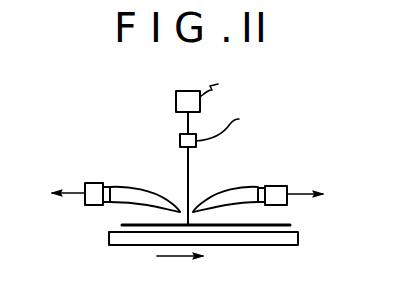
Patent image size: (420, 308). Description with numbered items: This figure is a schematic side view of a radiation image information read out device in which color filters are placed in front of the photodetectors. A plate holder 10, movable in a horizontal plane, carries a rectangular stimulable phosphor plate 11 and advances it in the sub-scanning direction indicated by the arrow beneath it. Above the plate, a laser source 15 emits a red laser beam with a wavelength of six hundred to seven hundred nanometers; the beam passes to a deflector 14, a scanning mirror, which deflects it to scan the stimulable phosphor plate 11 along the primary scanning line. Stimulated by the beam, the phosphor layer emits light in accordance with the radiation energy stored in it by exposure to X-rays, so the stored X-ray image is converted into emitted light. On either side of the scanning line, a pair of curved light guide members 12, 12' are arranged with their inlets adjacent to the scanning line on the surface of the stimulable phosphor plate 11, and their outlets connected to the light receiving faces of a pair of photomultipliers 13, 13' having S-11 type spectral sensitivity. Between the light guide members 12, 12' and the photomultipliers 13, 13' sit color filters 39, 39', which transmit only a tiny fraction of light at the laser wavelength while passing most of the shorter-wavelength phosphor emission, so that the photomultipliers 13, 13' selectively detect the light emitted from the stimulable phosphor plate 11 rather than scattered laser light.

The plate holder 10 is at (122, 245).
The stimulable phosphor plate 11 is at (122, 224).
The light guide member 12 is at (228, 177).
The light guide member 12' is at (143, 179).
The photodetector (photomultiplier) 13 is at (294, 172).
The photomultiplier 13' is at (67, 176).
The deflector (scanning mirror) 14 is at (180, 140).
The laser source 15 is at (176, 98).
The color filter 39 is at (294, 213).
The color filter 39' is at (77, 212).